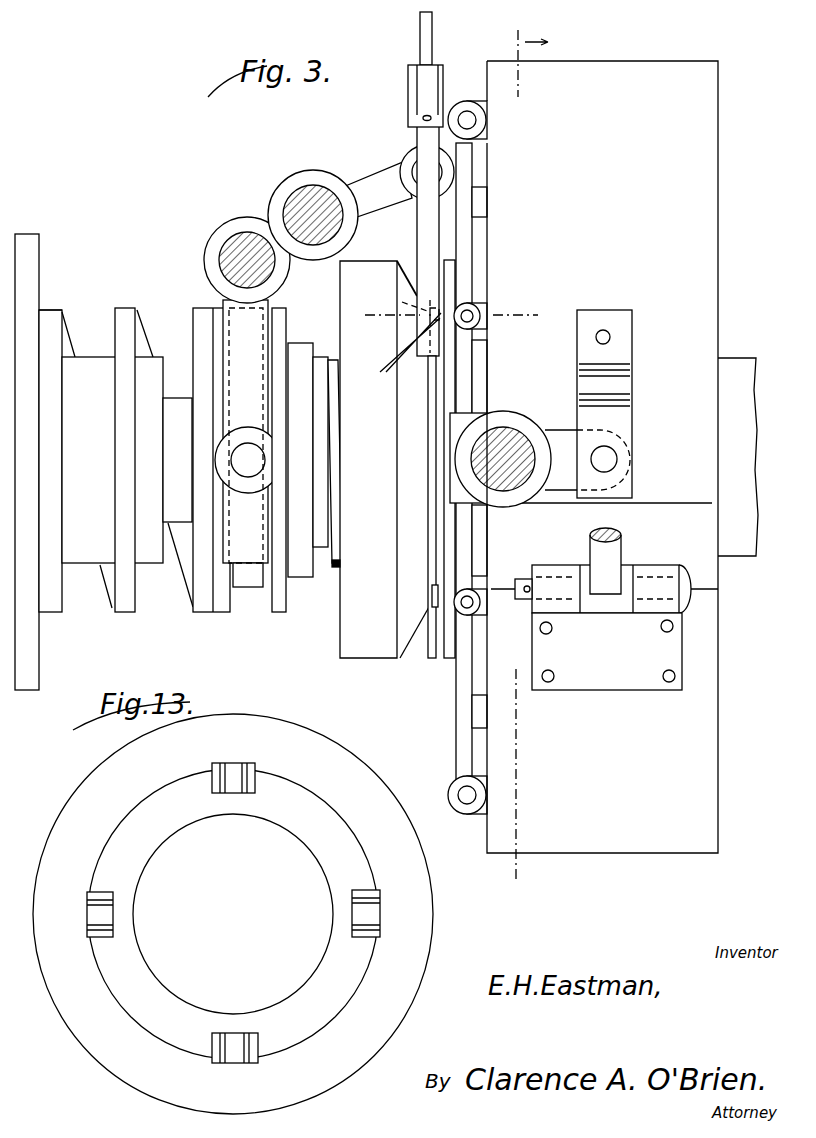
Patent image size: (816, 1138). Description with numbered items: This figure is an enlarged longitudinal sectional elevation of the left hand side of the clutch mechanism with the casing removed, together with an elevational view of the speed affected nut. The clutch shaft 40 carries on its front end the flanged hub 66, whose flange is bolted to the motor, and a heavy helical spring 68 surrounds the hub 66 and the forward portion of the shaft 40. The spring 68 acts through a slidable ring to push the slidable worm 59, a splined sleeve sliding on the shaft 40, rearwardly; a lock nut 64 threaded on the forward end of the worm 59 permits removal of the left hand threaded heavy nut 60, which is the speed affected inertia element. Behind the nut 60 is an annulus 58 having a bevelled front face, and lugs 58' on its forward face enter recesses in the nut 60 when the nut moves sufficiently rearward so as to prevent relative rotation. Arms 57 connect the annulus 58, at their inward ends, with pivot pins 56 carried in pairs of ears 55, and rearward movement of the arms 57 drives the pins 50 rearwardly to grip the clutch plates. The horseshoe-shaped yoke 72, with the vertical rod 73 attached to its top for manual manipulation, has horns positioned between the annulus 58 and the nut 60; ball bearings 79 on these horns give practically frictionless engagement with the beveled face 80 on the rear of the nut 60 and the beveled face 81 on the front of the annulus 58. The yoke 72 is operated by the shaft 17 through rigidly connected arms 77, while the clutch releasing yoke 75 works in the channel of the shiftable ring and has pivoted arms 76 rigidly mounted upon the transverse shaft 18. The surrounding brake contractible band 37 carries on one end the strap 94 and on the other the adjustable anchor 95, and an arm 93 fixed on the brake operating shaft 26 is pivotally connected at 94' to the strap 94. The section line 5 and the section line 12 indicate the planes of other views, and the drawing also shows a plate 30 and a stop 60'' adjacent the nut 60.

In FIG. 3, the section line 5 is at (527, 454).
In FIG. 3, the section line 12 is at (450, 329).
In FIG. 3, the shaft 17 is at (306, 188).
In FIG. 3, the transverse shaft 18 is at (229, 231).
In FIG. 3, the brake operating shaft 26 is at (503, 427).
In FIG. 3, the plate 30 is at (230, 609).
In FIG. 3, the brake contractible band 37 is at (707, 293).
In FIG. 3, the clutch shaft 40 is at (181, 391).
In FIG. 3, the pins 50 is at (486, 199).
In FIG. 3, the ears 55 is at (480, 815).
In FIG. 3, the pivot pins 56 is at (476, 795).
In FIG. 3, the arms 57 is at (458, 737).
In FIG. 3, the annulus 58 is at (485, 455).
In FIG. 13, the annulus 58 is at (233, 908).
In FIG. 3, the lugs 58' is at (397, 439).
In FIG. 13, the lugs 58' is at (233, 906).
In FIG. 3, the slidable worm 59 is at (337, 577).
In FIG. 3, the nut 60 is at (386, 481).
In FIG. 3, the stop block 60'' is at (399, 531).
In FIG. 3, the lock nut 64 is at (308, 574).
In FIG. 3, the flanged hub 66 is at (44, 263).
In FIG. 3, the helical spring 68 is at (136, 302).
In FIG. 3, the yoke 72 is at (409, 232).
In FIG. 3, the vertical rod 73 is at (432, 37).
In FIG. 3, the clutch releasing yoke 75 is at (253, 583).
In FIG. 3, the arms 76 is at (258, 343).
In FIG. 3, the arms 77 is at (381, 187).
In FIG. 3, the ball bearings 79 is at (444, 273).
In FIG. 3, the beveled face 80 is at (413, 628).
In FIG. 3, the beveled face 81 is at (445, 624).
In FIG. 3, the arm 93 is at (552, 427).
In FIG. 3, the strap 94 is at (628, 404).
In FIG. 3, the pivotal connection 94' is at (632, 459).
In FIG. 3, the adjustable anchor 95 is at (612, 553).